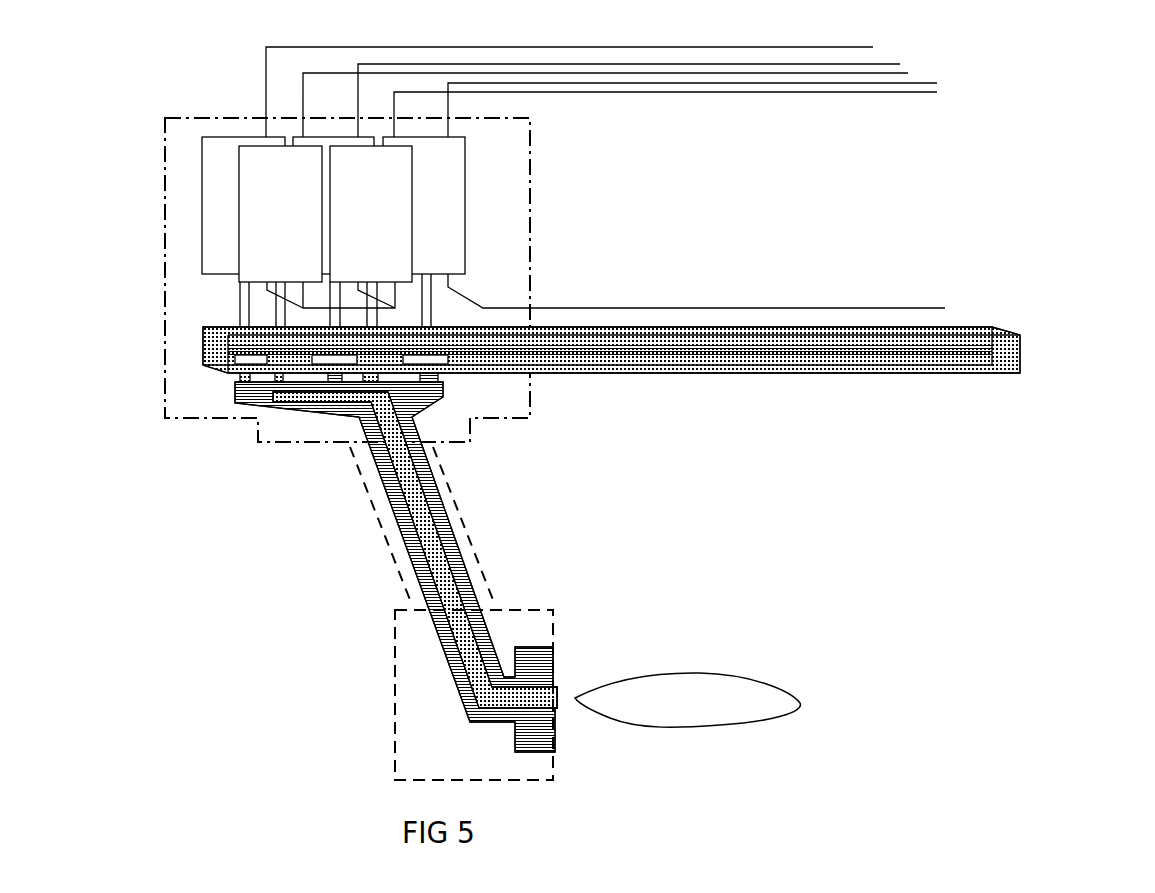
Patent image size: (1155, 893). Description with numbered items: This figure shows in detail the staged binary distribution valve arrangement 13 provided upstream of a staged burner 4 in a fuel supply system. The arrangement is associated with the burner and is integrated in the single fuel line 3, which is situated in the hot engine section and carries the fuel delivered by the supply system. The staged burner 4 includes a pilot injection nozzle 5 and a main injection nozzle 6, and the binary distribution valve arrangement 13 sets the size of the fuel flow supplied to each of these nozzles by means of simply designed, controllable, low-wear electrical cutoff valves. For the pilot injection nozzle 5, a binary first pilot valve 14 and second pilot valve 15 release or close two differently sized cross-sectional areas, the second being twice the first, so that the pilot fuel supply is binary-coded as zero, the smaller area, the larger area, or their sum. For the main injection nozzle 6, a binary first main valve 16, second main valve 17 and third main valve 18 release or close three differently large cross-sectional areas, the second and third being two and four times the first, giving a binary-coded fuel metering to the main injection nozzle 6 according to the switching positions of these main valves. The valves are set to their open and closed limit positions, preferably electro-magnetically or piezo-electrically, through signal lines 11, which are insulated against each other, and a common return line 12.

The single fuel line 3 is at (1003, 350).
The staged burner 4 is at (395, 690).
The pilot injection nozzle 5 is at (558, 698).
The main injection nozzle 6 is at (557, 655).
The signal lines 11 is at (817, 47).
The common return line 12 is at (857, 308).
The binary distribution valve arrangement 13 is at (165, 222).
The first pilot valve 14 is at (280, 214).
The second pilot valve 15 is at (371, 214).
The first main valve 16 is at (243, 205).
The second main valve 17 is at (323, 142).
The third main valve 18 is at (424, 205).